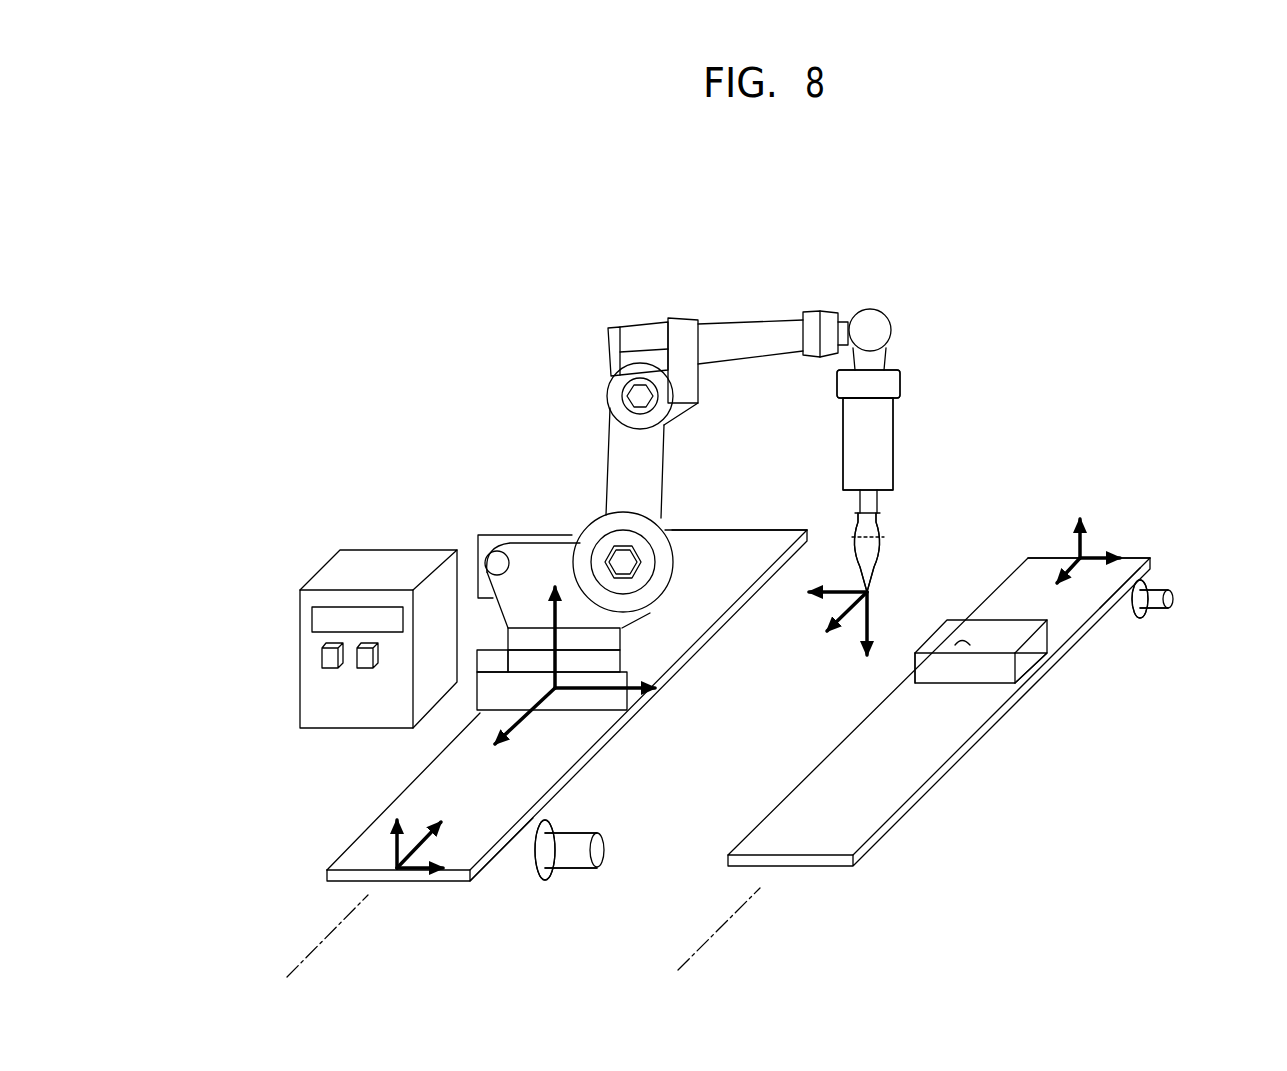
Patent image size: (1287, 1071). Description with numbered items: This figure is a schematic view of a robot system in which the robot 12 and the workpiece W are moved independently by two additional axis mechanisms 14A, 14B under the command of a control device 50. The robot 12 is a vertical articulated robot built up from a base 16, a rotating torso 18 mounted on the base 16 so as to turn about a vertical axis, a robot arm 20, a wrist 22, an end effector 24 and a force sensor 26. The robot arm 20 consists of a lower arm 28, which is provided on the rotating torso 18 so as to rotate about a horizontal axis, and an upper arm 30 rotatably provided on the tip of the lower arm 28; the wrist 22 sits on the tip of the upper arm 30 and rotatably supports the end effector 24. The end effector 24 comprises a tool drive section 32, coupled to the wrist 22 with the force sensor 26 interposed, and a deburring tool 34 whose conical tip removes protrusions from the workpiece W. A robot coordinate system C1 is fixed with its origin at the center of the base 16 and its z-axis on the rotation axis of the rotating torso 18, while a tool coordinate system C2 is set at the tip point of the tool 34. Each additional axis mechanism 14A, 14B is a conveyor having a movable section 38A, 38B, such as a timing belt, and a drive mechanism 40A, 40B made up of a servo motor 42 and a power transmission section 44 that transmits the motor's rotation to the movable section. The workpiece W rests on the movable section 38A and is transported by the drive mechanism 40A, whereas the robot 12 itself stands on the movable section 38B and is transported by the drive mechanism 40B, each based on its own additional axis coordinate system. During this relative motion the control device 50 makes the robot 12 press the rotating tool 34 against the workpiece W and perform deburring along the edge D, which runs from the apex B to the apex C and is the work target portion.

The robot 12 is at (560, 283).
The additional axis mechanism 14A is at (955, 818).
The additional axis mechanism 14B is at (302, 866).
The base 16 is at (596, 704).
The rotating torso 18 is at (528, 558).
The robot arm 20 is at (672, 304).
The wrist 22 is at (887, 355).
The end effector 24 is at (823, 459).
The force sensor 26 is at (902, 385).
The lower arm 28 is at (620, 466).
The upper arm 30 is at (765, 332).
The tool drive section 32 is at (894, 429).
The tool 34 is at (884, 540).
The movable section 38A is at (1030, 572).
The movable section 38B is at (723, 547).
The drive mechanism 40A is at (1161, 629).
The drive mechanism 40B is at (564, 903).
The servo motor 42 is at (1173, 599).
The power transmission section 44 is at (1115, 619).
The control device 50 is at (363, 566).
The workpiece W is at (958, 633).
The apex B is at (915, 653).
The apex C is at (1022, 665).
The edge D is at (958, 655).
The robot coordinate system C1 is at (526, 722).
The tool coordinate system C2 is at (853, 647).